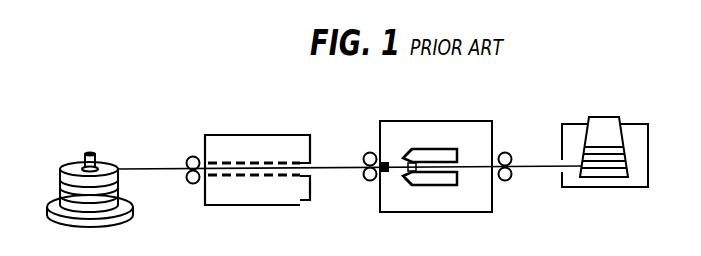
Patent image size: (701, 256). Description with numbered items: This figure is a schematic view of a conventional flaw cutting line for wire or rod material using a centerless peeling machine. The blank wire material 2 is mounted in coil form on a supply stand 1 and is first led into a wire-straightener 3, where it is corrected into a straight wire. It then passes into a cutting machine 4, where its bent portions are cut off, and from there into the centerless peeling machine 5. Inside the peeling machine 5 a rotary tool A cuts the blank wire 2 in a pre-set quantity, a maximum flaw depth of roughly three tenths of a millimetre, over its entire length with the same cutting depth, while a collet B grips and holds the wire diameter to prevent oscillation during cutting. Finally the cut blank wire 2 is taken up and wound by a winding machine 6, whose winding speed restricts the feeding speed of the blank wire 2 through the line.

The supply stand 1 is at (62, 205).
The blank wire material 2 is at (163, 169).
The wire-straightener 3 is at (247, 145).
The cutting machine 4 is at (306, 148).
The centerless peeling machine 5 is at (482, 128).
The rotary tool A is at (403, 156).
The collet B is at (414, 162).
The winding machine 6 is at (594, 128).